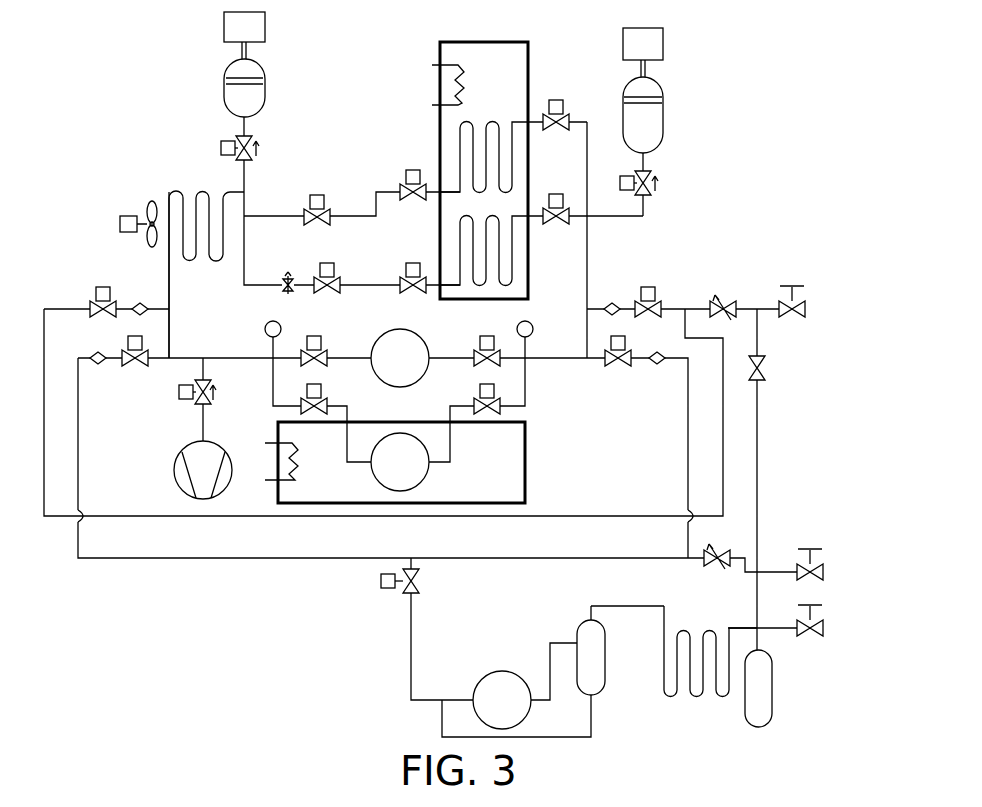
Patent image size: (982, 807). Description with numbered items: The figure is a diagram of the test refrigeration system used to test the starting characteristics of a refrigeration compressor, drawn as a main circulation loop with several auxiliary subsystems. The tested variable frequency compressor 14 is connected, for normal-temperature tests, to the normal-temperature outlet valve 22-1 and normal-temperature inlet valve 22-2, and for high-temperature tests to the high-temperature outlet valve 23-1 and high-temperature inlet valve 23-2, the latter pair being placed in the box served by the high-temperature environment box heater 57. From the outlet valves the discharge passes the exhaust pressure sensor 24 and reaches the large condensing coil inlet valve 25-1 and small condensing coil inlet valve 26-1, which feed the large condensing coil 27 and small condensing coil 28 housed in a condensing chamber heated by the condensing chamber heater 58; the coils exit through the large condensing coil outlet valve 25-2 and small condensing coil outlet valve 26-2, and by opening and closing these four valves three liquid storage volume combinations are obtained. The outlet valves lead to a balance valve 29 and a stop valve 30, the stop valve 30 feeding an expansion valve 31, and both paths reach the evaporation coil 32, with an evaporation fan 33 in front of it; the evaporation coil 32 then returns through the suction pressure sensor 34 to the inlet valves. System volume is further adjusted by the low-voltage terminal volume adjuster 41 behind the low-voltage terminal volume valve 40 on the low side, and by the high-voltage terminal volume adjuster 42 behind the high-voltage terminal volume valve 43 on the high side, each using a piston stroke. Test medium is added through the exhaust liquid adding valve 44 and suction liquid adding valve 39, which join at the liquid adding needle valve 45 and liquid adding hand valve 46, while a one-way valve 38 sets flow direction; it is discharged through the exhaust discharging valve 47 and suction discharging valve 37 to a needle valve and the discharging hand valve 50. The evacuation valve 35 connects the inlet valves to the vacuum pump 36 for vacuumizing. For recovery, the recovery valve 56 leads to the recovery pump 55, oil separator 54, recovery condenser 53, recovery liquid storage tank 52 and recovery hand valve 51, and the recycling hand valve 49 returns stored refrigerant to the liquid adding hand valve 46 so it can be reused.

The tested variable frequency compressor 14 is at (400, 410).
The normal-temperature outlet valve 22-1 is at (488, 343).
The normal-temperature inlet valve 22-2 is at (315, 343).
The high-temperature outlet valve 23-1 is at (476, 398).
The high-temperature inlet valve 23-2 is at (326, 398).
The exhaust pressure sensor 24 is at (534, 329).
The large condensing coil inlet valve 25-1 is at (558, 106).
The large condensing coil outlet valve 25-2 is at (413, 176).
The small condensing coil inlet valve 26-1 is at (558, 200).
The small condensing coil outlet valve 26-2 is at (413, 270).
The large condensing coil 27 is at (491, 148).
The small condensing coil 28 is at (491, 242).
The balance valve 29 is at (317, 201).
The stop valve 30 is at (327, 269).
The expansion valve 31 is at (288, 275).
The evaporation coil 32 is at (206, 266).
The evaporation fan 33 is at (128, 224).
The suction pressure sensor 34 is at (265, 329).
The evacuation valve 35 is at (205, 392).
The vacuum pump 36 is at (203, 470).
The suction discharging valve 37 is at (135, 358).
The one-way valve 38 is at (98, 366).
The suction liquid adding valve 39 is at (103, 293).
The low-voltage terminal volume valve 40 is at (229, 148).
The low-voltage terminal volume adjuster 41 is at (235, 64).
The high-voltage terminal volume adjuster 42 is at (655, 90).
The high-voltage terminal volume valve 43 is at (648, 183).
The exhaust liquid adding valve 44 is at (648, 293).
The liquid adding needle valve 45 is at (723, 297).
The liquid adding hand valve 46 is at (820, 300).
The exhaust discharging valve 47 is at (618, 362).
The recycling hand valve 49 is at (765, 368).
The discharging hand valve 50 is at (830, 567).
The recovery hand valve 51 is at (825, 640).
The recovery liquid storage tank 52 is at (758, 688).
The recovery condenser 53 is at (710, 651).
The oil separator 54 is at (591, 657).
The recovery pump 55 is at (502, 700).
The recovery valve 56 is at (390, 581).
The high-temperature environment box heater 57 is at (277, 461).
The condensing chamber heater 58 is at (435, 85).